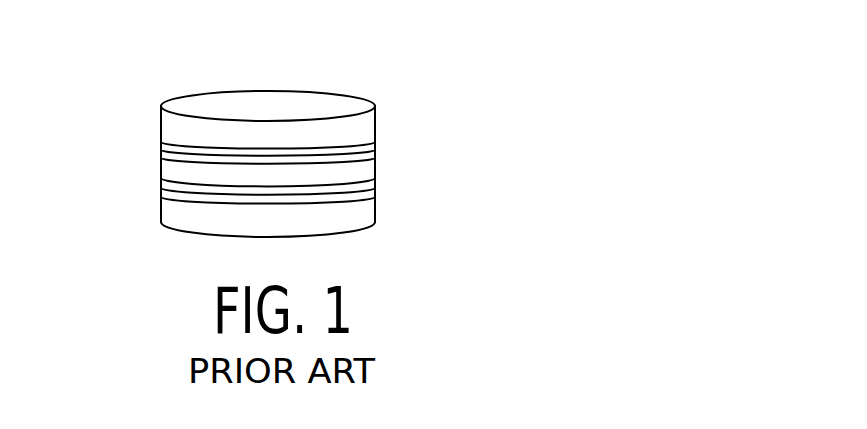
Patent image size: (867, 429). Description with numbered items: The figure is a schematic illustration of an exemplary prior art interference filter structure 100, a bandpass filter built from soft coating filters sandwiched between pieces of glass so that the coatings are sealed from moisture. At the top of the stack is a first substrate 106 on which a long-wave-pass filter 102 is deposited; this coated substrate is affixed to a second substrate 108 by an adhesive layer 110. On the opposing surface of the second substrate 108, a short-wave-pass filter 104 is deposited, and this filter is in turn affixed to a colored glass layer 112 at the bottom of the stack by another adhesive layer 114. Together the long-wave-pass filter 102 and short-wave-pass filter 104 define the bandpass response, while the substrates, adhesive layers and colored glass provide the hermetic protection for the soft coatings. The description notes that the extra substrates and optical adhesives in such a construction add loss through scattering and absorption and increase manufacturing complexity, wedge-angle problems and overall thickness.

The interference filter structure 100 is at (442, 80).
The long-wave-pass filter 102 is at (375, 135).
The short-wave-pass filter 104 is at (375, 173).
The first substrate 106 is at (173, 100).
The second substrate 108 is at (161, 158).
The adhesive layer 110 is at (161, 147).
The colored glass layer 112 is at (375, 207).
The adhesive layer 114 is at (375, 182).